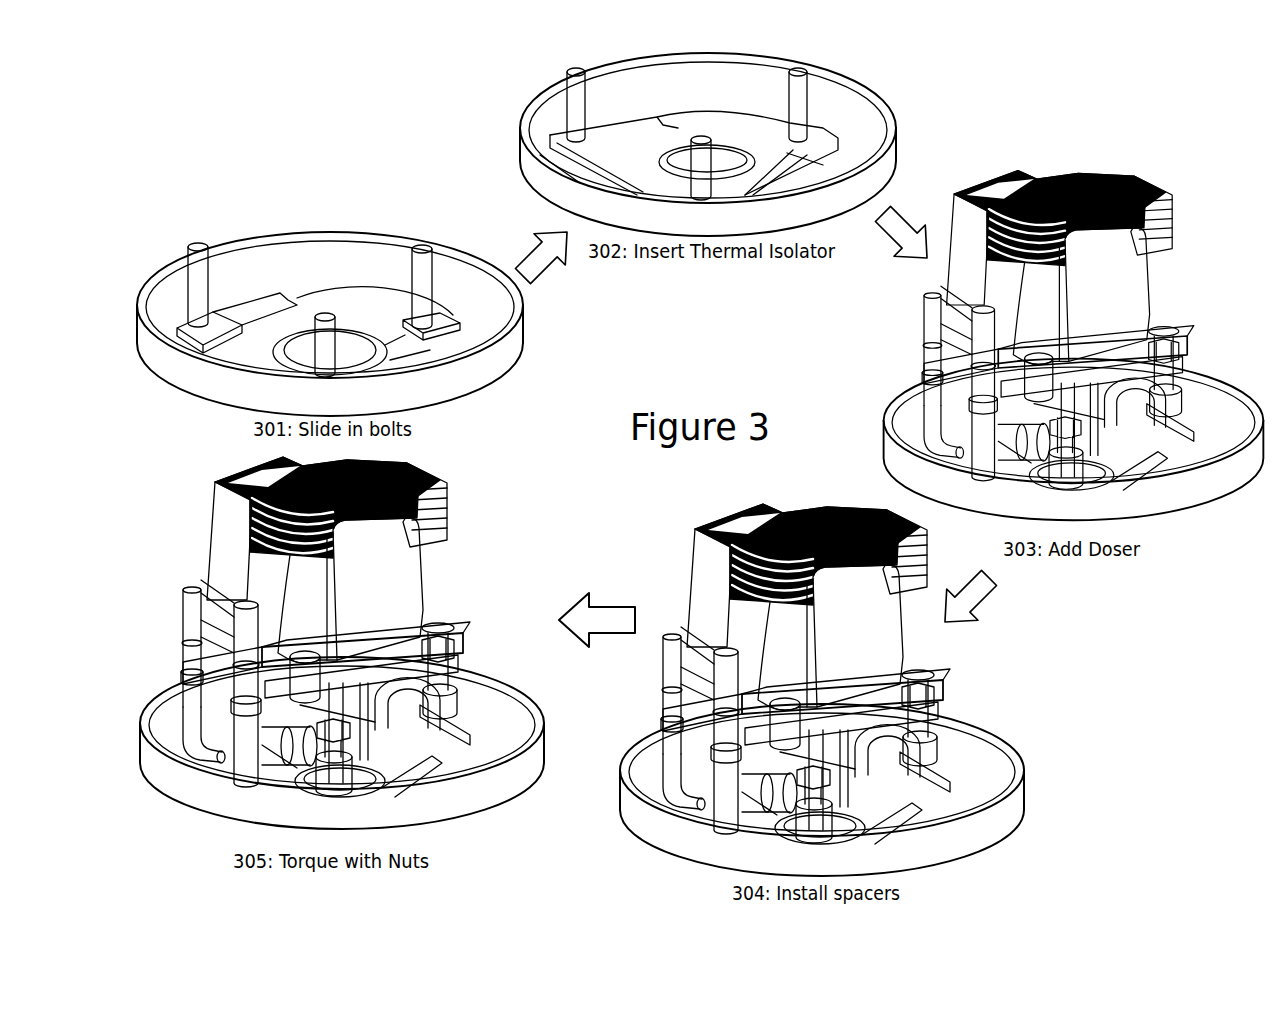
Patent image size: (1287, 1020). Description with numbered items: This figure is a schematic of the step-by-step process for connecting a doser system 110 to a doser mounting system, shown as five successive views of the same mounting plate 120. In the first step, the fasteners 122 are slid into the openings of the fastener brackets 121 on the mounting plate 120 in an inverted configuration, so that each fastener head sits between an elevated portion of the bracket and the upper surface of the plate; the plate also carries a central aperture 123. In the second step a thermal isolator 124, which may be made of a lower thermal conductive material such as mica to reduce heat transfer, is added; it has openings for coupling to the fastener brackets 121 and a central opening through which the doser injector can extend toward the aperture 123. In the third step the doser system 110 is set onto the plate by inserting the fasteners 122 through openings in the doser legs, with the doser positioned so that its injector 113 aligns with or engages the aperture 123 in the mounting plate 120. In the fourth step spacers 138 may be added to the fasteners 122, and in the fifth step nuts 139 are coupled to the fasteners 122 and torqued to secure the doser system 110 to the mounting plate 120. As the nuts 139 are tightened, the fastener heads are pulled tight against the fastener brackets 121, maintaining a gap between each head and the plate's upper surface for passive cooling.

The doser system 110 is at (1078, 177).
The injector 113 is at (1093, 453).
The mounting plate 120 is at (162, 307).
The fastener brackets 121 is at (213, 323).
The fasteners 122 is at (200, 273).
The aperture 123 is at (347, 357).
The thermal isolator 124 is at (757, 143).
The spacers 138 is at (935, 735).
The nuts 139 is at (456, 670).